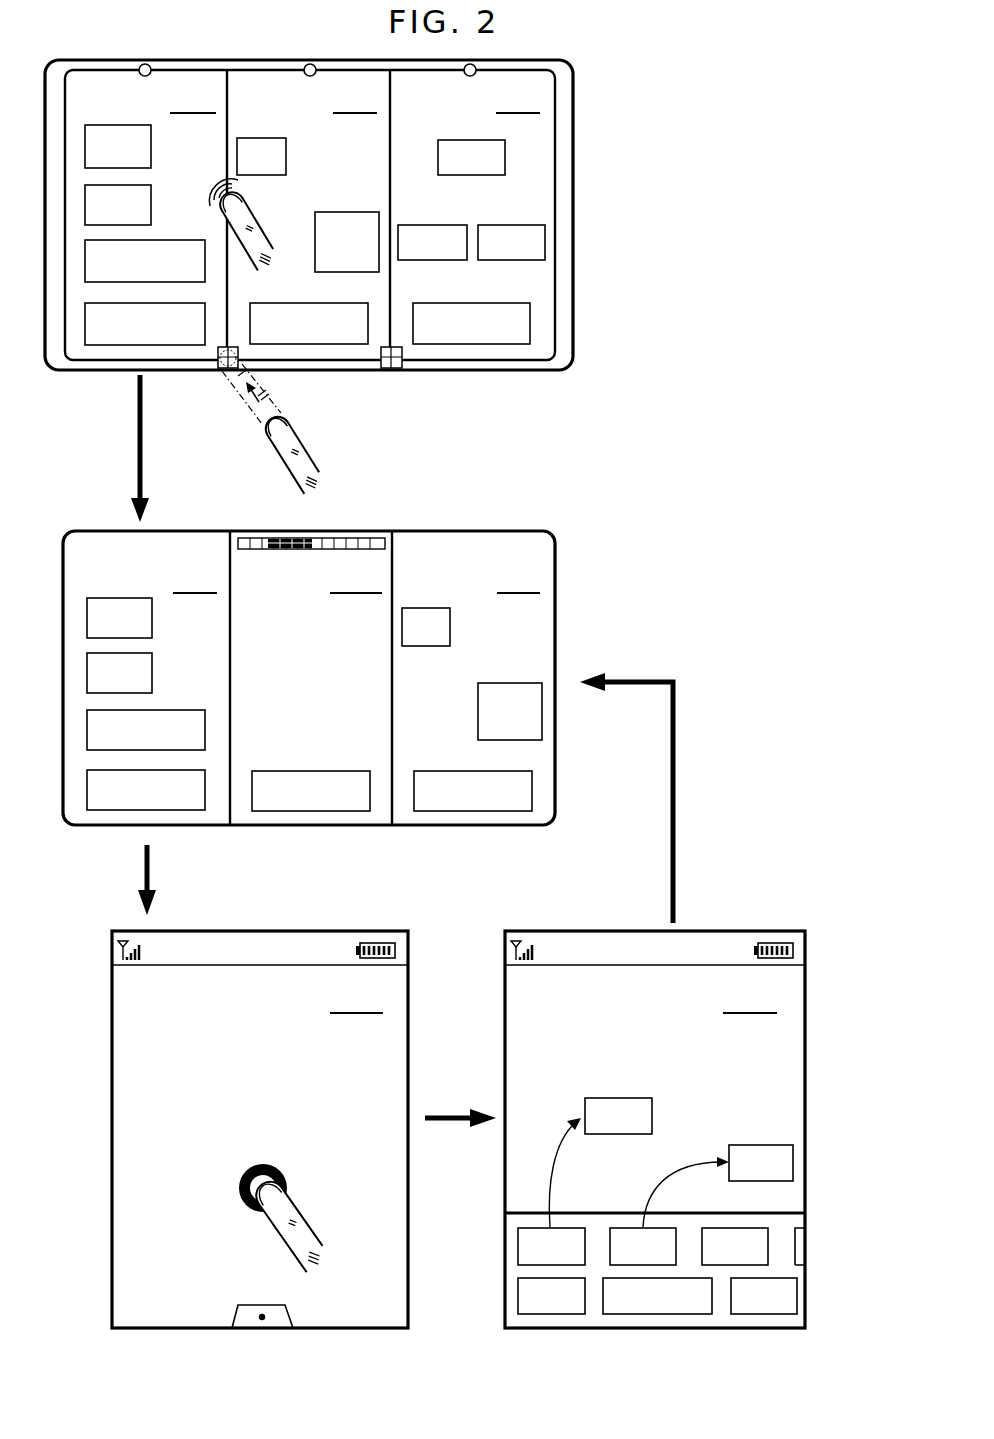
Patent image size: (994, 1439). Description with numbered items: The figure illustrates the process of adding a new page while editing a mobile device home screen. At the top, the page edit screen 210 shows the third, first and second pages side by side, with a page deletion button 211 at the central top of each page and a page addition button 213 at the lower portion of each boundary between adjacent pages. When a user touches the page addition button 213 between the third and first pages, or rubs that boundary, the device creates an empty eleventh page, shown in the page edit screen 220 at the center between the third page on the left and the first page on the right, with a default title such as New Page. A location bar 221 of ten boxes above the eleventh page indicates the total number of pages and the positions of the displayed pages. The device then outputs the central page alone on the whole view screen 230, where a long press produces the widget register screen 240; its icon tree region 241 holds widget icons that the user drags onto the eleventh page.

The page edit screen 210 is at (574, 99).
The page deletion button 211 is at (475, 64).
The page addition button 213 is at (401, 367).
The page edit screen 220 is at (309, 652).
The location bar 221 is at (352, 531).
The whole view screen 230 is at (342, 931).
The widget register screen 240 is at (678, 1105).
The icon tree region 241 is at (782, 1223).